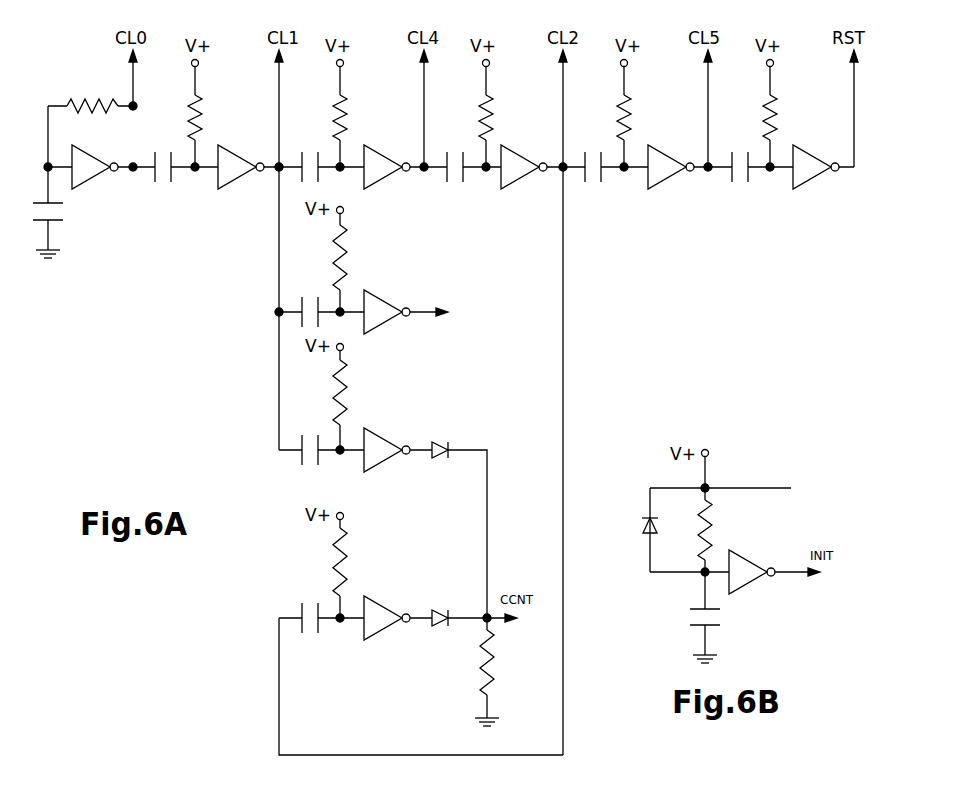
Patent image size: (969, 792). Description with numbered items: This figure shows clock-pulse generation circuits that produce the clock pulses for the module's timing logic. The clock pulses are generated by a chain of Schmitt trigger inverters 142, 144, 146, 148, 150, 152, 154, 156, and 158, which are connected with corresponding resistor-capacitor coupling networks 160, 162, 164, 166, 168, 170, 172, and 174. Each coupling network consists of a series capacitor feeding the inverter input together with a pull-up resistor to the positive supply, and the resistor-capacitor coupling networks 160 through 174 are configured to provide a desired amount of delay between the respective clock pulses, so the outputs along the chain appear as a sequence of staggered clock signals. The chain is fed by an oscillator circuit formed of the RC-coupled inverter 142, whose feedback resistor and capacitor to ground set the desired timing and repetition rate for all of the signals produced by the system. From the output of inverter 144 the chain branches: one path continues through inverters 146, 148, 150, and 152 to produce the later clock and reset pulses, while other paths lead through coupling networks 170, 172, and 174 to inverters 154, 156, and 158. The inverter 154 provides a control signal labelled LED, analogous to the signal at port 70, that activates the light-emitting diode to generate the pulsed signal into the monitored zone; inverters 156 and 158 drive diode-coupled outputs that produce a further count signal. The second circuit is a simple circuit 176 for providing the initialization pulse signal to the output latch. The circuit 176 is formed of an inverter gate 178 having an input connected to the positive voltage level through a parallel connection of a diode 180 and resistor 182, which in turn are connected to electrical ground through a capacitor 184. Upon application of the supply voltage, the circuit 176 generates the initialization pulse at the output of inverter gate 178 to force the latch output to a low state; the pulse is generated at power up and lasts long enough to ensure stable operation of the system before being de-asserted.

In FIG. 6A, the Schmitt trigger inverter 142 is at (82, 170).
In FIG. 6A, the Schmitt trigger inverter 144 is at (231, 172).
In FIG. 6A, the Schmitt trigger inverter 146 is at (378, 172).
In FIG. 6A, the Schmitt trigger inverter 148 is at (513, 170).
In FIG. 6A, the Schmitt trigger inverter 150 is at (668, 170).
In FIG. 6A, the Schmitt trigger inverter 152 is at (808, 168).
In FIG. 6A, the resistor-capacitor coupling network 160 is at (216, 119).
In FIG. 6A, the resistor-capacitor coupling network 162 is at (360, 127).
In FIG. 6A, the resistor-capacitor coupling network 164 is at (508, 127).
In FIG. 6A, the resistor-capacitor coupling network 166 is at (650, 119).
In FIG. 6A, the resistor-capacitor coupling network 168 is at (796, 119).
In FIG. 6A, the resistor-capacitor coupling network 170 is at (365, 266).
In FIG. 6A, the resistor-capacitor coupling network 172 is at (366, 393).
In FIG. 6A, the resistor-capacitor coupling network 174 is at (366, 548).
In FIG. 6A, the Schmitt trigger inverter 154 is at (382, 315).
In FIG. 6A, the Schmitt trigger inverter 156 is at (382, 447).
In FIG. 6A, the Schmitt trigger inverter 158 is at (375, 612).
In FIG. 6A, the port 70 is at (423, 308).
In FIG. 6B, the circuit 176 is at (744, 467).
In FIG. 6B, the inverter gate 178 is at (743, 580).
In FIG. 6B, the diode 180 is at (643, 530).
In FIG. 6B, the resistor 182 is at (712, 545).
In FIG. 6B, the capacitor 184 is at (722, 620).